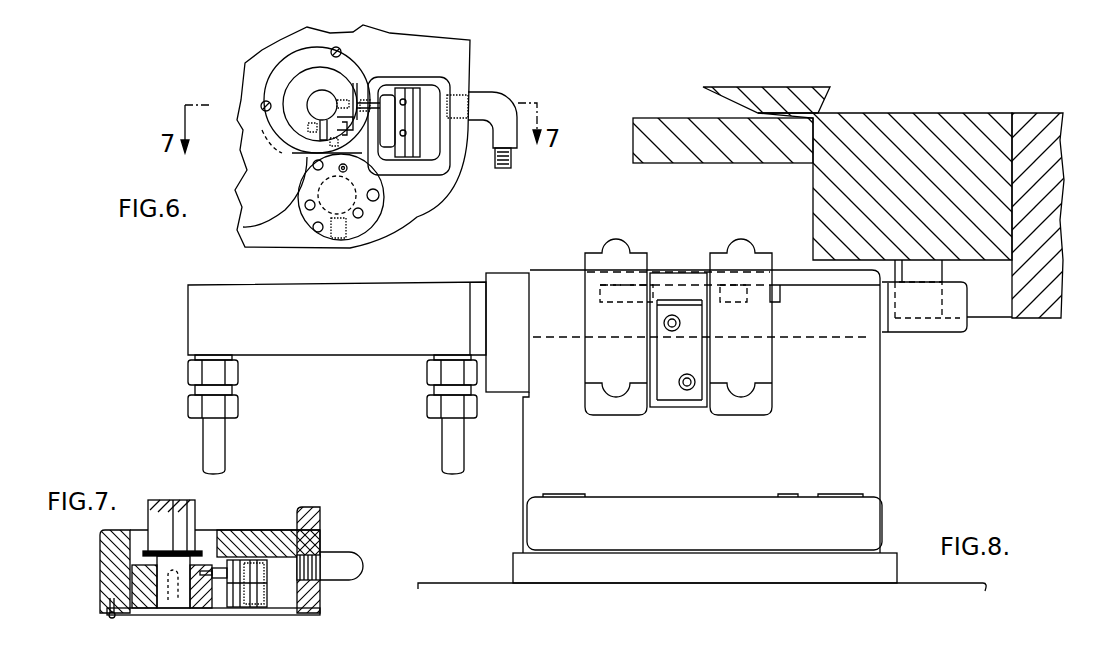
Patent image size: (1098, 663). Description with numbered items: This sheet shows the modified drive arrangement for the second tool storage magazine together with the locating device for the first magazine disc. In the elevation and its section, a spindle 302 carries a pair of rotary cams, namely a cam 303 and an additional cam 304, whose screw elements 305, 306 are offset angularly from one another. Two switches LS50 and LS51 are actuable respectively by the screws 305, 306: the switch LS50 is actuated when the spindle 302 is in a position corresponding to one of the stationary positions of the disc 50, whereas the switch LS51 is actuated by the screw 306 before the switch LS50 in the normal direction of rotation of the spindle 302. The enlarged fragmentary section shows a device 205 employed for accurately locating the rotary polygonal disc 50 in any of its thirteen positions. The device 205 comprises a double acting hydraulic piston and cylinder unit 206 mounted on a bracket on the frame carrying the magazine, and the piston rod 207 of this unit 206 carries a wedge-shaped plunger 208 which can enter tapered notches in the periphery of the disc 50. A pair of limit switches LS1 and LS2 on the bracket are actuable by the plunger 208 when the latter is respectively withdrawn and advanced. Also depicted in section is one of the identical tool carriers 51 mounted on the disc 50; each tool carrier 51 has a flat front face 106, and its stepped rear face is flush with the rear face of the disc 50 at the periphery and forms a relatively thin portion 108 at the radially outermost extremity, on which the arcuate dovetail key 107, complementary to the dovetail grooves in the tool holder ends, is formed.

In FIG. 6, the spindle 302 is at (322, 100).
In FIG. 7, the spindle 302 is at (182, 520).
In FIG. 7, the cam 303 is at (100, 557).
In FIG. 7, the additional cam 304 is at (110, 598).
In FIG. 6, the screw element 305 is at (362, 102).
In FIG. 7, the screw element 305 is at (217, 563).
In FIG. 6, the screw element 306 is at (360, 155).
In FIG. 6, the switch LS50 is at (407, 122).
In FIG. 7, the switch LS50 is at (260, 567).
In FIG. 6, the switch LS51 is at (388, 113).
In FIG. 7, the switch LS51 is at (263, 597).
In FIG. 8, the rotary polygonal disc 50 is at (1028, 123).
In FIG. 8, the tool carrier 51 is at (833, 168).
In FIG. 8, the flat front face 106 is at (913, 113).
In FIG. 8, the arcuate dovetail key 107 is at (813, 98).
In FIG. 8, the thin portion 108 is at (663, 150).
In FIG. 8, the locating device 205 is at (520, 422).
In FIG. 8, the double acting hydraulic piston and cylinder unit 206 is at (328, 338).
In FIG. 8, the piston rod 207 is at (552, 300).
In FIG. 8, the wedge-shaped plunger 208 is at (927, 327).
In FIG. 8, the limit switch LS1 is at (623, 362).
In FIG. 8, the limit switch LS2 is at (745, 362).